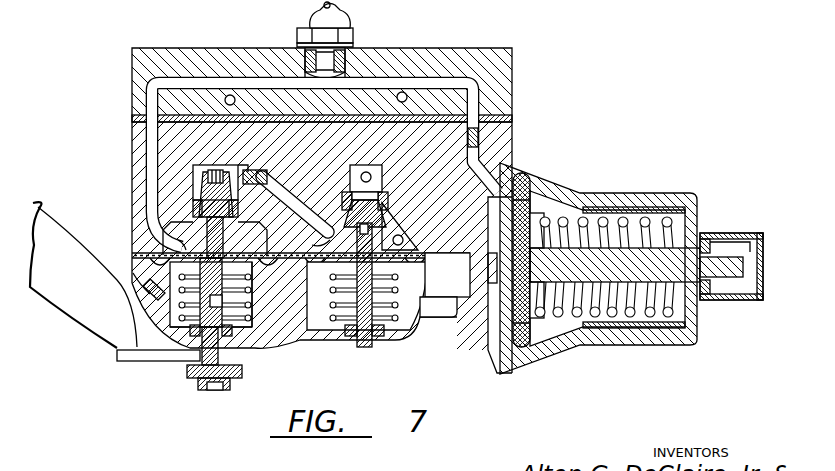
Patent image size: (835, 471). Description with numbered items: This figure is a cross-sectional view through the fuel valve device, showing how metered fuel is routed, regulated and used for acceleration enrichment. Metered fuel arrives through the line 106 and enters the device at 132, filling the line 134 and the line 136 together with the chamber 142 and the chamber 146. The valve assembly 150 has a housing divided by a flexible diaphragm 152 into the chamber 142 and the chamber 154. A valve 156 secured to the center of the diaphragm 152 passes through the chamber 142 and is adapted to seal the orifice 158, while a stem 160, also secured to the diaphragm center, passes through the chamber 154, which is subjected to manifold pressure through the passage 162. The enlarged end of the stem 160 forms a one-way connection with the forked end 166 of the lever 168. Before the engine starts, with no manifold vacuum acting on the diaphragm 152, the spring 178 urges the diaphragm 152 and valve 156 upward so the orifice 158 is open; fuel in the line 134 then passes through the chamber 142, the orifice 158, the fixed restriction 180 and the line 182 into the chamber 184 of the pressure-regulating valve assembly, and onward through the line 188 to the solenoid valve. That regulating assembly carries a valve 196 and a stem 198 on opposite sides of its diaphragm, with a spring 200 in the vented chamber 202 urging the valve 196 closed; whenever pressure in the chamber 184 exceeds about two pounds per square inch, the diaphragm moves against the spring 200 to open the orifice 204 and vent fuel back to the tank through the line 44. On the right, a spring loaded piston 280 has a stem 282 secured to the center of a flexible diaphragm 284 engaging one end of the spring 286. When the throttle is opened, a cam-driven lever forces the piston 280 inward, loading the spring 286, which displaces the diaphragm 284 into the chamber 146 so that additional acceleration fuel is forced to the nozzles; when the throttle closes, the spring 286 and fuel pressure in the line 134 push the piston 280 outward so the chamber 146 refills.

The line 106 is at (330, 14).
The inlet 132 is at (352, 60).
The line 134 is at (150, 104).
The line 136 is at (237, 101).
The valve assembly 150 is at (124, 155).
The lever 168 is at (50, 227).
The orifice 158 is at (200, 201).
The chamber 142 is at (183, 232).
The flexible diaphragm 152 is at (146, 284).
The passage 162 is at (158, 297).
The forked end 166 is at (163, 354).
The fixed restriction 180 is at (265, 160).
The line 182 is at (284, 187).
The line 44 is at (367, 166).
The valve 196 is at (320, 240).
The valve 156 is at (218, 232).
The chamber 154 is at (250, 287).
The spring 178 is at (255, 327).
The stem 160 is at (250, 340).
The stem 198 is at (363, 340).
The spring 200 is at (410, 335).
The vented chamber 202 is at (424, 273).
The orifice 204 is at (380, 204).
The chamber 184 is at (398, 228).
The line 188 is at (403, 239).
The chamber 146 is at (500, 330).
The spring loaded piston 280 is at (697, 210).
The stem 282 is at (650, 278).
The flexible diaphragm 284 is at (545, 350).
The spring 286 is at (617, 315).